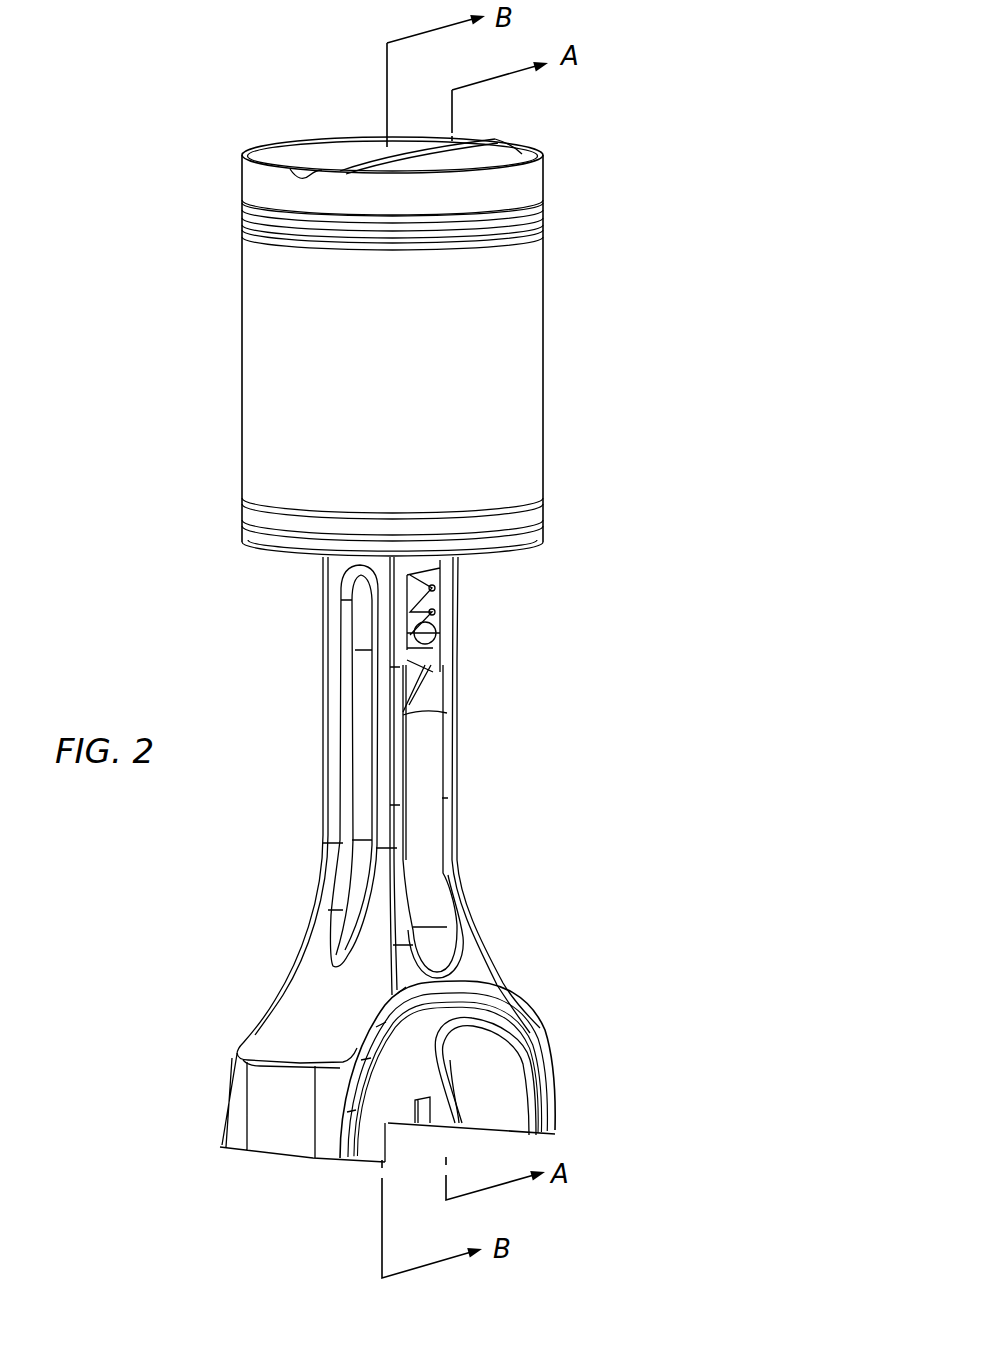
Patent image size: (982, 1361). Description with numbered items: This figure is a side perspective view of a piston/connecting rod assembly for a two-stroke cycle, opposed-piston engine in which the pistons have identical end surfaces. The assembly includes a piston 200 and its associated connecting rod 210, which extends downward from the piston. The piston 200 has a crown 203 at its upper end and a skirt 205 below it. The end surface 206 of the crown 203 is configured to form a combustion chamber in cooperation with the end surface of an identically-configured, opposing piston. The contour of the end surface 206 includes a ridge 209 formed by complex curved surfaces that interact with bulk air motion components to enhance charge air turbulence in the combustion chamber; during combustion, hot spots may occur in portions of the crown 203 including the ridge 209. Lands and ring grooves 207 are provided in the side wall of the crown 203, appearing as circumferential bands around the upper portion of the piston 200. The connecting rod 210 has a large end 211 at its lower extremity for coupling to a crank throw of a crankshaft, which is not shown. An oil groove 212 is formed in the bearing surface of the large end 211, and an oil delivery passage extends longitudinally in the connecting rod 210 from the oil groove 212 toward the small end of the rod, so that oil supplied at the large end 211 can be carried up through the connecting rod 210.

The piston 200 is at (596, 337).
The crown 203 is at (530, 183).
The skirt 205 is at (545, 398).
The end surface 206 is at (311, 126).
The lands and ring grooves 207 is at (233, 197).
The ridge 209 is at (500, 146).
The connecting rod 210 is at (487, 798).
The large end 211 is at (542, 1063).
The oil groove 212 is at (452, 1063).